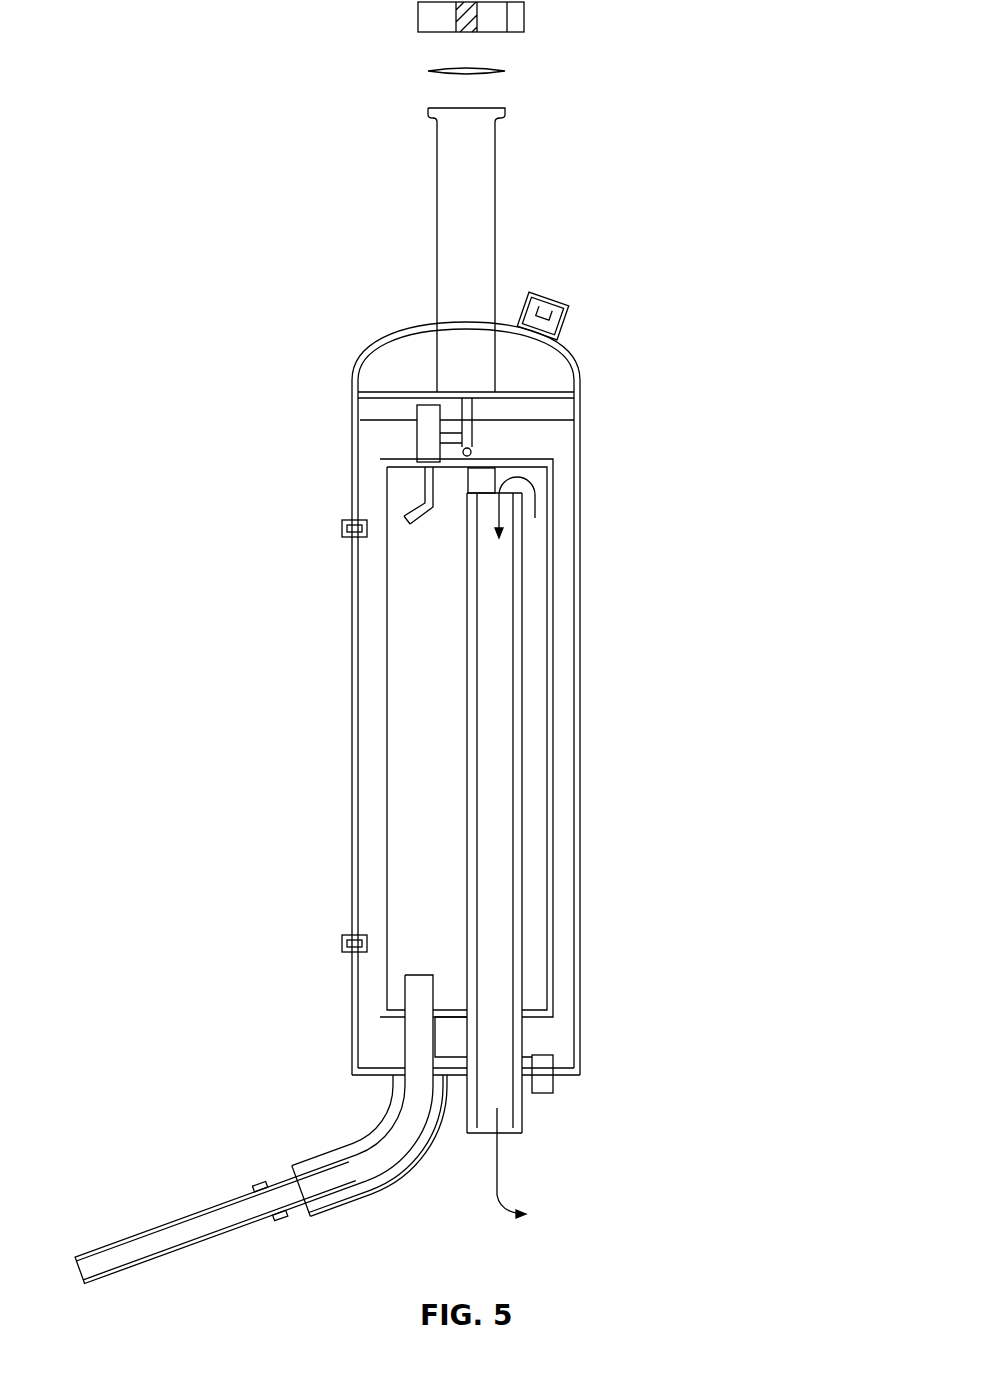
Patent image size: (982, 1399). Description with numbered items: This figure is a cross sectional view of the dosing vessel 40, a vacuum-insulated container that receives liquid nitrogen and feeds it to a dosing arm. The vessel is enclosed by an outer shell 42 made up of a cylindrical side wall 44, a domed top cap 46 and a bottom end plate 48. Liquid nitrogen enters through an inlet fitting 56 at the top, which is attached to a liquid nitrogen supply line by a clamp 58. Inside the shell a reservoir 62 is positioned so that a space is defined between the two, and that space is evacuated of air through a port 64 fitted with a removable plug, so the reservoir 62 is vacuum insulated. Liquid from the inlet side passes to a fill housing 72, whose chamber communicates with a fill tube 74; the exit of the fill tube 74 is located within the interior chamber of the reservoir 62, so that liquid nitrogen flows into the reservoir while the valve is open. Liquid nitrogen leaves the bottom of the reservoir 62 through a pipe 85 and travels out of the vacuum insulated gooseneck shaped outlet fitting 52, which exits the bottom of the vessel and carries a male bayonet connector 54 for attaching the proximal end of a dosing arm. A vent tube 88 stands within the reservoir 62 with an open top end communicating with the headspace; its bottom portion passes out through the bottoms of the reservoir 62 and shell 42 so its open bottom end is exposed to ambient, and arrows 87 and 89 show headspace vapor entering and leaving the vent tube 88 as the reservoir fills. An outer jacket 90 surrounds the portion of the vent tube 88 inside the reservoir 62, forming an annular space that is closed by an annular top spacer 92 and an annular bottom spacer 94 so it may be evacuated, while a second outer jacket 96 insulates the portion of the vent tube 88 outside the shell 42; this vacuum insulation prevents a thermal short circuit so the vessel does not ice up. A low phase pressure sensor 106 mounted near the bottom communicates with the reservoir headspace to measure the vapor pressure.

The dosing vessel 40 is at (720, 408).
The outer shell 42 is at (410, 705).
The cylindrical side wall 44 is at (352, 637).
The top cap 46 is at (373, 337).
The bottom end plate 48 is at (377, 1080).
The gooseneck shaped outlet fitting 52 is at (353, 1133).
The male bayonet connector 54 is at (182, 1213).
The inlet fitting 56 is at (497, 213).
The clamp 58 is at (524, 16).
The reservoir 62 is at (553, 735).
The port 64 is at (560, 307).
The fill housing 72 is at (417, 422).
The fill tube 74 is at (404, 519).
The pipe 85 is at (405, 1040).
The arrow 87 is at (518, 478).
The vent tube 88 is at (525, 820).
The arrow 89 is at (500, 1150).
The outer jacket 90 is at (522, 623).
The top spacer 92 is at (470, 497).
The bottom spacer 94 is at (520, 1013).
The outer jacket 96 is at (527, 1117).
The low phase pressure sensor 106 is at (547, 1087).